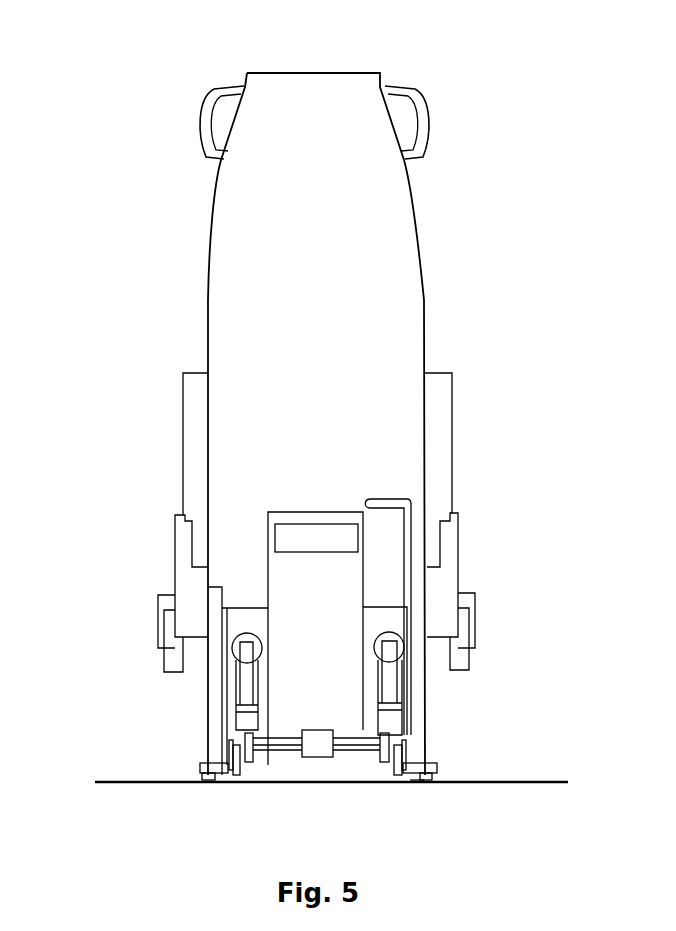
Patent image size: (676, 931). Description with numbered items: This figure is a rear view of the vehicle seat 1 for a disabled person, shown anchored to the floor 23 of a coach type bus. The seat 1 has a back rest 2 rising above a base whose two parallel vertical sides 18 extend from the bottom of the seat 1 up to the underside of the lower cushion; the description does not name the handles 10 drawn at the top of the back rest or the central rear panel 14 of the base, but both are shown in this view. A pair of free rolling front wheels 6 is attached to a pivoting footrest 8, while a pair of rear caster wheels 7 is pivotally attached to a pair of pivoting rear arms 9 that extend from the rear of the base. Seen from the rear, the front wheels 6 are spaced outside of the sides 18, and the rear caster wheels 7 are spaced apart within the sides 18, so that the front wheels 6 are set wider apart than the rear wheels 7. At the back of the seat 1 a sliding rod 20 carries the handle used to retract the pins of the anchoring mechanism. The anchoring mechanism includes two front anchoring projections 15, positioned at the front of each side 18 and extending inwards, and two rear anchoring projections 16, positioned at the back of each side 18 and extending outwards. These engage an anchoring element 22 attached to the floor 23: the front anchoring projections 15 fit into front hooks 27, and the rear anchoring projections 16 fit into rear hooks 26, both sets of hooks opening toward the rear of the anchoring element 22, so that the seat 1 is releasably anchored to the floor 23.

The vehicle seat 1 is at (428, 398).
The back rest 2 is at (378, 72).
The front wheels 6 is at (173, 654).
The rear caster wheels 7 is at (245, 688).
The pivoting footrest 8 is at (177, 594).
The pivoting rear arms 9 is at (250, 722).
The handle 10 is at (203, 122).
The central frame 14 is at (268, 519).
The front anchoring projections 15 is at (232, 776).
The rear anchoring projections 16 is at (200, 783).
The sides 18 is at (213, 593).
The sliding rod 20 is at (412, 512).
The anchoring element 22 is at (417, 790).
The floor 23 is at (548, 783).
The rear hooks 26 is at (205, 762).
The front hooks 27 is at (225, 758).